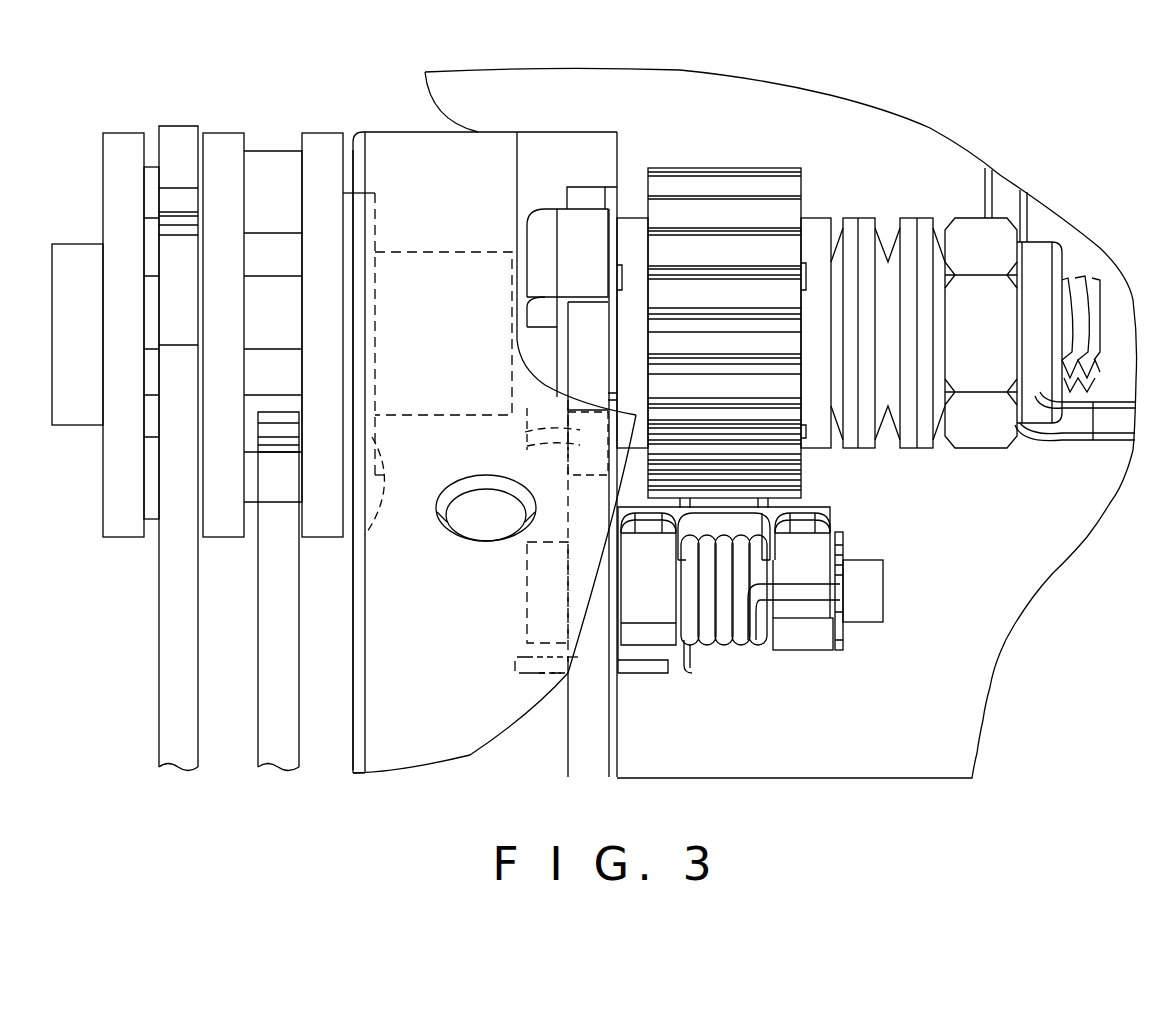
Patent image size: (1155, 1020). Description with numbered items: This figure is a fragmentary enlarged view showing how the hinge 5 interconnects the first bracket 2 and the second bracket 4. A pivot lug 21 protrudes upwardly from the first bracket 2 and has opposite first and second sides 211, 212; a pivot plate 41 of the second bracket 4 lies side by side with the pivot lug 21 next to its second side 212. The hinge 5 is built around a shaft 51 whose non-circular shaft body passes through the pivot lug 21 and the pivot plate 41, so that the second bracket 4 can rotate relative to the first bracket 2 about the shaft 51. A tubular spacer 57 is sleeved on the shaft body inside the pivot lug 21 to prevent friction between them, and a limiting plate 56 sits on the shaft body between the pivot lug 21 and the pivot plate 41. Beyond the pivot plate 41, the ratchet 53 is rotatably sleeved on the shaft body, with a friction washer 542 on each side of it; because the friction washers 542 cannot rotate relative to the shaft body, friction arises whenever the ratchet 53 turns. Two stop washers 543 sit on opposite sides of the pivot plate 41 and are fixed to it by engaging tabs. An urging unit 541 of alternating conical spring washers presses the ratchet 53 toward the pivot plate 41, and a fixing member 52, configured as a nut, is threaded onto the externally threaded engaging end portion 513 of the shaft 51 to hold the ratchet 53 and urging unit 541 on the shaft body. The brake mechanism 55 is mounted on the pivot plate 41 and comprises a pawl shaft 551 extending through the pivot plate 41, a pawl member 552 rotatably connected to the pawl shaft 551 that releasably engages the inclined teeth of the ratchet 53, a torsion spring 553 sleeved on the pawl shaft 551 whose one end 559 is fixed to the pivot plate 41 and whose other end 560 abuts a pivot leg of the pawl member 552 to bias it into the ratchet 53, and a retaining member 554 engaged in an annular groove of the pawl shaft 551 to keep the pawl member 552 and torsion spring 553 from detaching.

The first bracket 2 is at (348, 683).
The second bracket 4 is at (458, 88).
The hinge 5 is at (775, 167).
The pivot lug 21 is at (390, 147).
The pivot plate 41 is at (579, 690).
The shaft 51 is at (63, 422).
The fixing member 52 is at (987, 433).
The ratchet 53 is at (792, 475).
The brake mechanism 55 is at (873, 628).
The limiting plate 56 is at (542, 238).
The spacer 57 is at (362, 537).
The first side 211 is at (352, 148).
The second side 212 is at (518, 172).
The engaging end portion 513 is at (1078, 365).
The urging unit 541 is at (868, 228).
The friction washer 542 is at (633, 232).
The stop washer 543 is at (525, 444).
The pawl shaft 551 is at (883, 600).
The pawl member 552 is at (805, 645).
The torsion spring 553 is at (735, 648).
The retaining member 554 is at (842, 645).
The one end of the torsion spring 559 is at (545, 665).
The other end of the torsion spring 560 is at (812, 590).